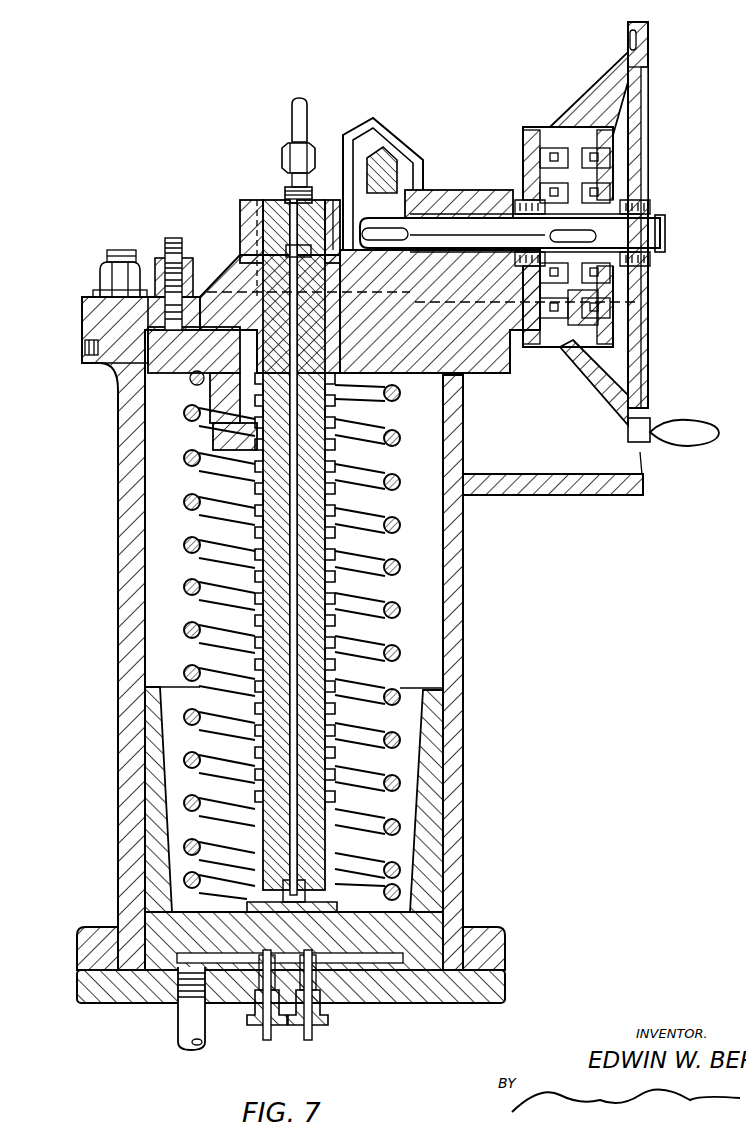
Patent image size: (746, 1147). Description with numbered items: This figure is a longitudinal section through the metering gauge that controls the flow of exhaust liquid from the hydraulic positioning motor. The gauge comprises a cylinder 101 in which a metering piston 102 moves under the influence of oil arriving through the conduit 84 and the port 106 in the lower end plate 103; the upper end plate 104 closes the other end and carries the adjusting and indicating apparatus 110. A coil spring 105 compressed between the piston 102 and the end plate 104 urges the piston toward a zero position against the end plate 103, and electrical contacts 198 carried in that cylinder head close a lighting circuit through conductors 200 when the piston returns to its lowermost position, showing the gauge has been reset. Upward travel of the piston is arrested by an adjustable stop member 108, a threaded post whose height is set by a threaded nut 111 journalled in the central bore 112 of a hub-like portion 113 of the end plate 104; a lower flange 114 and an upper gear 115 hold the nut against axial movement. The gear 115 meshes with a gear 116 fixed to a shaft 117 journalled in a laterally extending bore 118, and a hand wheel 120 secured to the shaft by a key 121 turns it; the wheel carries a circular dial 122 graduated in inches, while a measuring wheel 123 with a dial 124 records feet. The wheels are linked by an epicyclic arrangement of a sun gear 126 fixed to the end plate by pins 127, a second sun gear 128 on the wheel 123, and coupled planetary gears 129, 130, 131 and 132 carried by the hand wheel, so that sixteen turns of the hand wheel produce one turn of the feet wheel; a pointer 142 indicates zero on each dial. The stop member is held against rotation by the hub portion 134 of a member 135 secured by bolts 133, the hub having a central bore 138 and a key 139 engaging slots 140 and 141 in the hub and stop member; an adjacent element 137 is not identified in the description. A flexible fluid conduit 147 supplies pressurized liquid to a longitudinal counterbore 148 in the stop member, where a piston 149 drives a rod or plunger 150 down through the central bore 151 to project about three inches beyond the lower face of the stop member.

The conduit 84 is at (188, 1030).
The cylinder 101 is at (450, 590).
The metering piston 102 is at (455, 750).
The end plate 103 is at (503, 987).
The end plate 104 is at (90, 305).
The coil spring 105 is at (445, 655).
The port 106 is at (188, 990).
The adjustable stop member 108 is at (395, 550).
The adjusting and indicating apparatus 110 is at (455, 190).
The threaded nut 111 is at (258, 408).
The central bore 112 is at (240, 375).
The hub-like portion 113 is at (192, 350).
The flange 114 is at (227, 437).
The gear 115 is at (235, 260).
The gear 116 is at (390, 145).
The shaft 117 is at (440, 235).
The laterally extending bore 118 is at (505, 225).
The hand wheel 120 is at (628, 28).
The key 121 is at (655, 235).
The circular dial 122 is at (648, 55).
The measuring wheel 123 is at (648, 85).
The dial 124 is at (648, 72).
The sun gear 126 is at (537, 190).
The pins 127 is at (525, 195).
The second sun gear 128 is at (620, 195).
The planetary gear 129 is at (545, 165).
The planetary gear 130 is at (540, 335).
The planetary gear 131 is at (608, 158).
The planetary gear 132 is at (612, 318).
The bolts 133 is at (152, 252).
The hub portion 134 is at (263, 213).
The member 135 is at (280, 250).
The nut 137 is at (120, 255).
The central bore 138 is at (335, 195).
The key 139 is at (270, 193).
The longitudinal slot 140 is at (267, 187).
The longitudinal slot 141 is at (283, 160).
The pointer 142 is at (645, 470).
The flexible fluid conduit 147 is at (296, 117).
The longitudinal counterbore 148 is at (318, 190).
The piston 149 is at (300, 278).
The rod or plunger 150 is at (350, 140).
The central bore 151 is at (293, 806).
The electrical contacts 198 is at (268, 1000).
The conductors 200 is at (273, 1037).